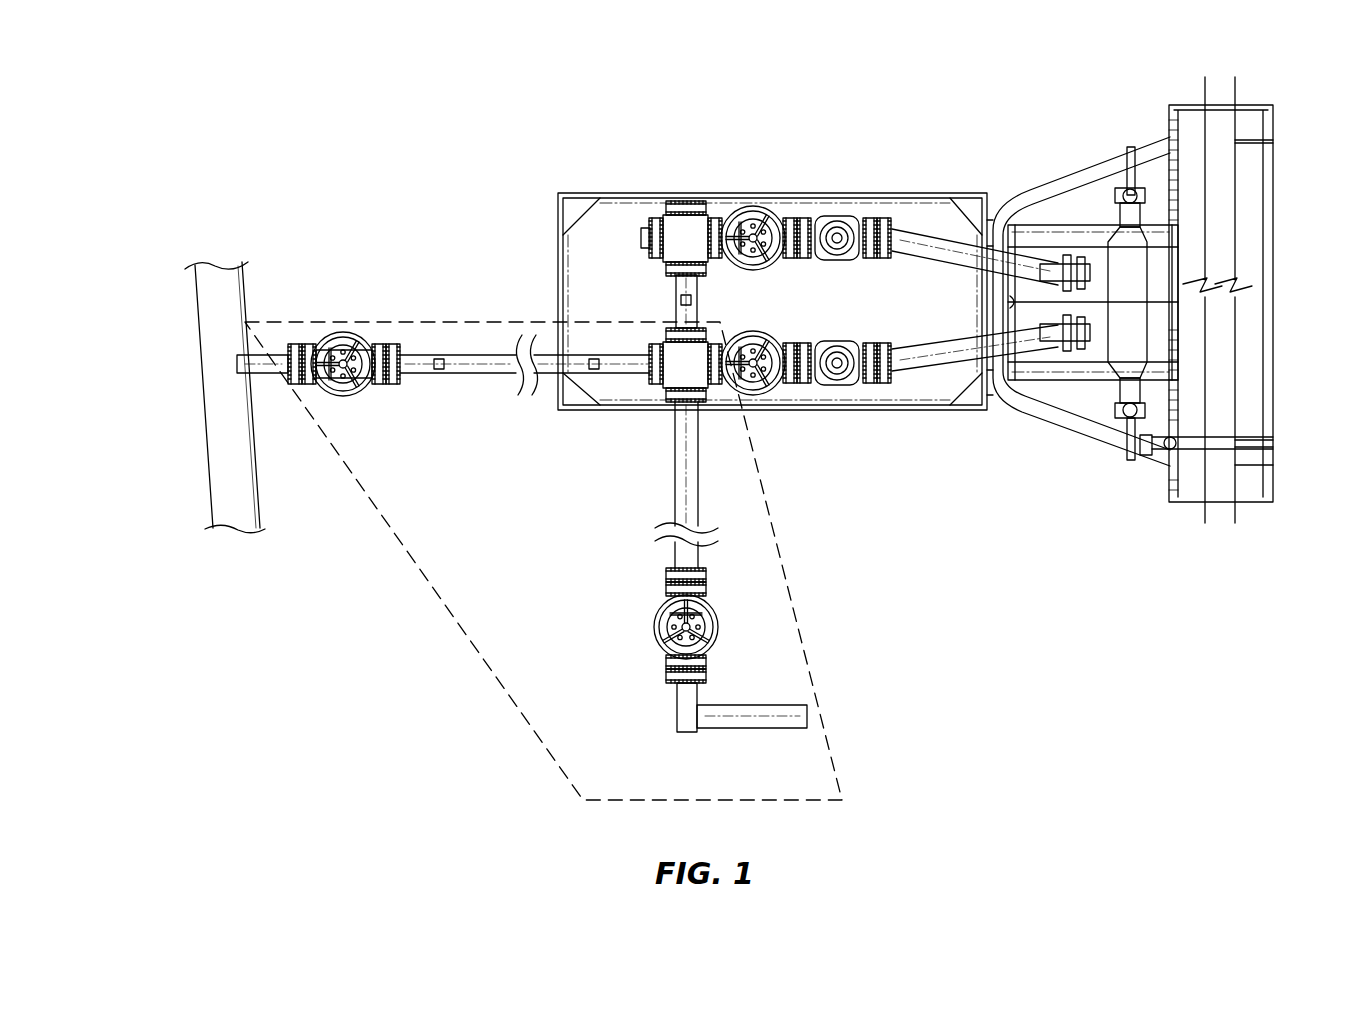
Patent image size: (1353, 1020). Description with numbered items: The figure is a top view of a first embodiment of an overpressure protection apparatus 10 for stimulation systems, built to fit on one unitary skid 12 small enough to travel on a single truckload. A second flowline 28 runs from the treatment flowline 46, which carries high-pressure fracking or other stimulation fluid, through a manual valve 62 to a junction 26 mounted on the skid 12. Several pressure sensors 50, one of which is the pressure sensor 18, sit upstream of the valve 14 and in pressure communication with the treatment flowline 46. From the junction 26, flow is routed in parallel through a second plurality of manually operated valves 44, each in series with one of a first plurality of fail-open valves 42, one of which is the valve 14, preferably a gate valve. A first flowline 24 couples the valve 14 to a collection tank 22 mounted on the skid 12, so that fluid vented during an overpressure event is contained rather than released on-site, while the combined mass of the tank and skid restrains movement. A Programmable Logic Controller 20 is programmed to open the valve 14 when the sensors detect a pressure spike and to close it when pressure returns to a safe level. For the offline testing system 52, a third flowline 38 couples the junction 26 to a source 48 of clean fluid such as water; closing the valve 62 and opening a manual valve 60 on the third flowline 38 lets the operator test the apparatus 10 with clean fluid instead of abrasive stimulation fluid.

The overpressure protection apparatus 10 is at (200, 100).
The skid 12 is at (670, 188).
The valve 14 is at (837, 387).
The pressure sensor 18 is at (693, 300).
The Programmable Logic Controller 20 is at (882, 318).
The collection tank 22 is at (1190, 502).
The first flowline 24 is at (960, 340).
The junction 26 is at (699, 379).
The second flowline 28 is at (492, 373).
The third flowline 38 is at (675, 478).
The first plurality of fail-open valves 42 is at (837, 214).
The second plurality of valves 44 is at (750, 205).
The treatment flowline 46 is at (241, 408).
The source 48 is at (750, 705).
The pressure sensors 50 is at (440, 357).
The offline testing system 52 is at (412, 563).
The valve 60 is at (655, 627).
The valve 62 is at (350, 330).